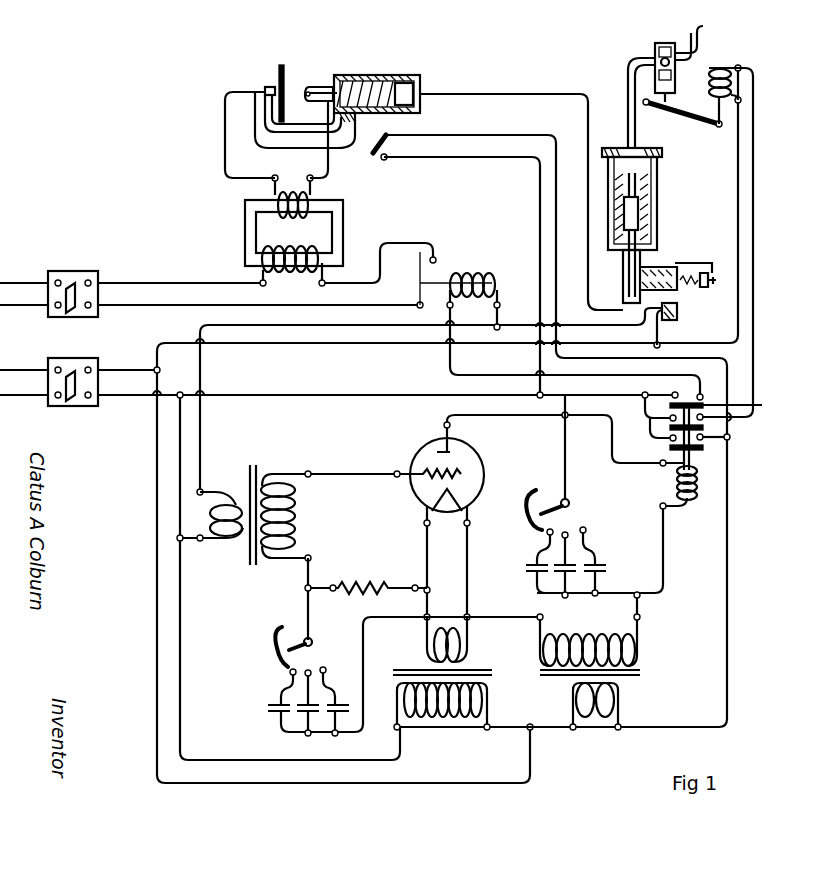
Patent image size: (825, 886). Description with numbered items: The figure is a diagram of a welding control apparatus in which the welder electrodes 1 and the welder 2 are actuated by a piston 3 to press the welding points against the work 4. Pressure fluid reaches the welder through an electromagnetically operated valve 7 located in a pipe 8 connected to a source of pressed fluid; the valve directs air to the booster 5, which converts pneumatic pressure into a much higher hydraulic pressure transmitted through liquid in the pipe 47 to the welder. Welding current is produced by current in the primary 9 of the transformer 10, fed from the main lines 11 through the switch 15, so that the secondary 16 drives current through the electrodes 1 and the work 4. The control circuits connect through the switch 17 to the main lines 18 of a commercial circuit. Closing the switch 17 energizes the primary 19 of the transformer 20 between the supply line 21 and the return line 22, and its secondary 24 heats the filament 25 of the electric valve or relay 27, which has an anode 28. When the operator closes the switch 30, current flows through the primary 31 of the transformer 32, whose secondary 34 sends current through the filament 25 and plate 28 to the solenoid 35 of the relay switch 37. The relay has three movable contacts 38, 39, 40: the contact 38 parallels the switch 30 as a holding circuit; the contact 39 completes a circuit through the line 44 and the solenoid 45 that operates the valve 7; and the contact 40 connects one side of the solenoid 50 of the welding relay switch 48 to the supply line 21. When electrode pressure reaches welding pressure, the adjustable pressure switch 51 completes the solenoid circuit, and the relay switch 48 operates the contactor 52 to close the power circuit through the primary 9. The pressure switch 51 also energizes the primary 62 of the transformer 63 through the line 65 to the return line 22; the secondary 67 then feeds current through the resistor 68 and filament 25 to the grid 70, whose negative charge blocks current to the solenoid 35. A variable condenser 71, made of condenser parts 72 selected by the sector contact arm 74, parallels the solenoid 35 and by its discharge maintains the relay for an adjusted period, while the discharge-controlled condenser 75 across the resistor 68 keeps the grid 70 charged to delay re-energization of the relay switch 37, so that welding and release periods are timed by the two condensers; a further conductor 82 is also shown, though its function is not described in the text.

The welder electrodes 1 is at (270, 86).
The welder 2 is at (377, 79).
The piston 3 is at (407, 84).
The work 4 is at (284, 72).
The booster 5 is at (659, 225).
The electromagnetically operated valve 7 is at (655, 54).
The pipe 8 is at (627, 109).
The primary 9 is at (267, 270).
The transformer 10 is at (312, 233).
The main lines 11 is at (14, 282).
The switch 15 is at (68, 273).
The secondary 16 is at (312, 194).
The switch 17 is at (73, 360).
The main lines 18 is at (22, 370).
The primary 19 is at (440, 718).
The transformer 20 is at (458, 687).
The supply line 21 is at (466, 160).
The return line 22 is at (281, 345).
The secondary 24 is at (461, 651).
The filament 25 is at (465, 501).
The electric valve or relay 27 is at (445, 519).
The anode 28 is at (452, 451).
The switch 30 is at (390, 147).
The primary 31 is at (620, 706).
The transformer 32 is at (610, 664).
The secondary 34 is at (592, 640).
The solenoid 35 is at (672, 486).
The relay switch 37 is at (704, 441).
The movable contact 38 is at (704, 448).
The movable contact 39 is at (733, 436).
The movable contact 40 is at (728, 407).
The line 44 is at (754, 160).
The solenoid 45 is at (731, 87).
The pipe 47 is at (498, 94).
The welding or relay switch 48 is at (575, 321).
The solenoid 50 is at (292, 313).
The adjustable pressure switch 51 is at (678, 318).
The contactor 52 is at (418, 289).
The primary 62 is at (215, 491).
The transformer 63 is at (244, 530).
The line 65 is at (374, 333).
The secondary 67 is at (298, 523).
The resistor 68 is at (375, 583).
The grid 70 is at (432, 474).
The variable condenser 71 is at (530, 565).
The condenser parts 72 is at (598, 565).
The sector contact arm 74 is at (547, 497).
The discharge-controlled condenser 75 is at (276, 706).
The conductor 82 is at (509, 136).